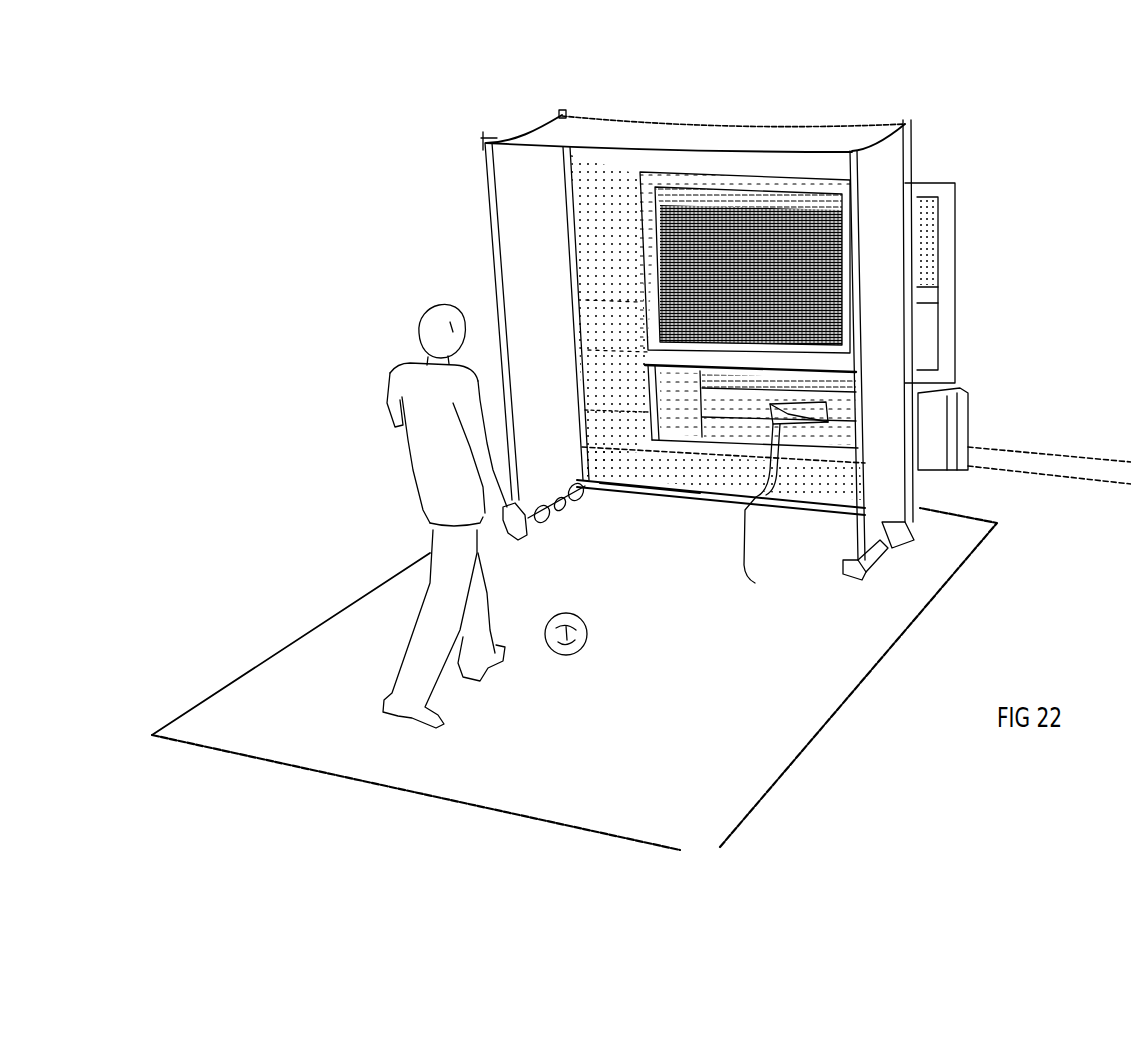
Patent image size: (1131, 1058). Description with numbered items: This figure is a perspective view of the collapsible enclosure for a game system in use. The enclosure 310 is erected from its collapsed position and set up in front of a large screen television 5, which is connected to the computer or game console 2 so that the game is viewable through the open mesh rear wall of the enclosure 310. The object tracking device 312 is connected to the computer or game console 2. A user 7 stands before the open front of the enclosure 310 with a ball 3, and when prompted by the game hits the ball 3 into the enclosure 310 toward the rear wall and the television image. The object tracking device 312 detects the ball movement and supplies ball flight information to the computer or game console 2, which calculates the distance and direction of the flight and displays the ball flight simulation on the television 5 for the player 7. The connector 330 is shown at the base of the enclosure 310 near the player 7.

The enclosure 310 is at (912, 102).
The large screen television 5 is at (957, 287).
The computer or game console 2 is at (813, 428).
The object tracking device 312 is at (648, 506).
The connector chain 330 is at (578, 494).
The user 7 is at (388, 388).
The ball 3 is at (589, 634).